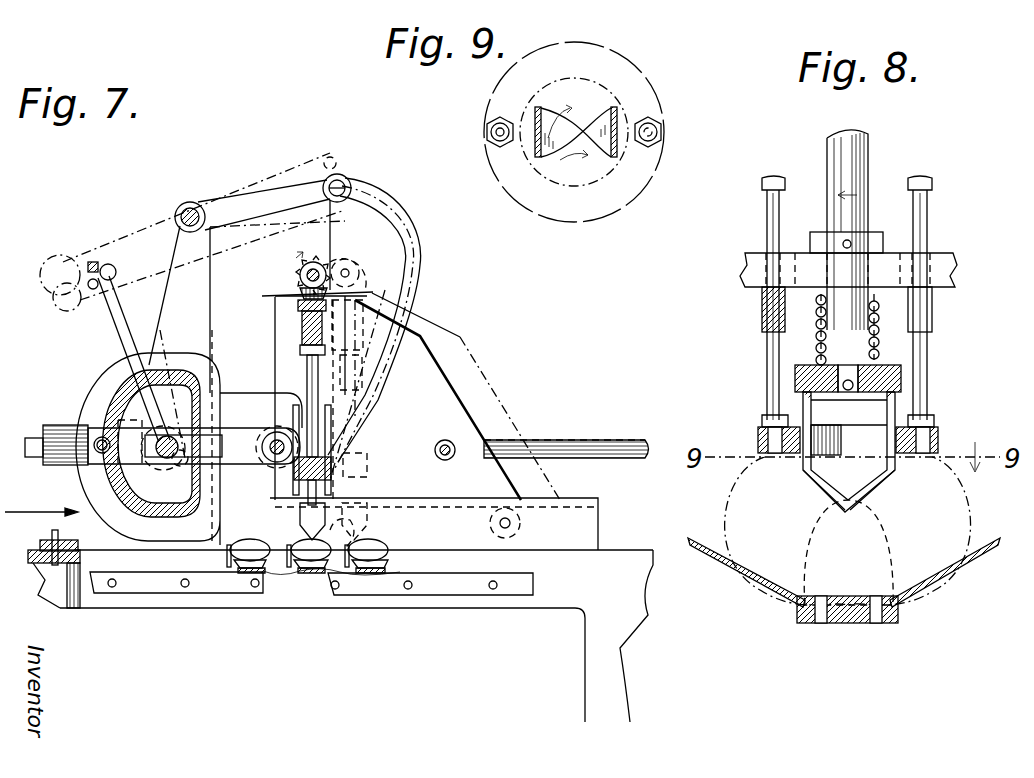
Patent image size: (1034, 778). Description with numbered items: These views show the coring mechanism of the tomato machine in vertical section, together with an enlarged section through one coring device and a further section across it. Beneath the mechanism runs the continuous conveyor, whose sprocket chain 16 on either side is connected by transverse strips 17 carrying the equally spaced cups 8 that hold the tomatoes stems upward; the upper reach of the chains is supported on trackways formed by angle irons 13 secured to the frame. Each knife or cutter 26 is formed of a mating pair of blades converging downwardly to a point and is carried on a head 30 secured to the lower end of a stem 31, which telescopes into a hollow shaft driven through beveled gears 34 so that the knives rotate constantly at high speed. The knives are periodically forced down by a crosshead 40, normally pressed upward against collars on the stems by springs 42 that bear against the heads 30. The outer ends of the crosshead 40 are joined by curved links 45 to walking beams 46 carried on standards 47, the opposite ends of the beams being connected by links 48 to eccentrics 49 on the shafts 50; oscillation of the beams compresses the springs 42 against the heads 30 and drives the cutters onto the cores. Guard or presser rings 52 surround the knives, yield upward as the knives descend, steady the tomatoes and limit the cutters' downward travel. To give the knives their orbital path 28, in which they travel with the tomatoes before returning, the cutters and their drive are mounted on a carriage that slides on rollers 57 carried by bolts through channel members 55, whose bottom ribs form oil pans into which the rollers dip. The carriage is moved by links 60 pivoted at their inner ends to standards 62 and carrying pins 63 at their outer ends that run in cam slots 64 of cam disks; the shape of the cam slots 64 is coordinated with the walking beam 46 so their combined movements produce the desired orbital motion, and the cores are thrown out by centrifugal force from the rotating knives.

In FIG. 7, the cups 8 is at (395, 565).
In FIG. 8, the cups 8 is at (945, 577).
In FIG. 7, the angle irons 13 is at (165, 594).
In FIG. 7, the sprocket chain 16 is at (332, 578).
In FIG. 7, the transverse strips 17 is at (243, 594).
In FIG. 7, the knives or cutters 26 is at (300, 529).
In FIG. 9, the knives or cutters 26 is at (605, 165).
In FIG. 8, the knives or cutters 26 is at (840, 500).
In FIG. 7, the orbital path 28 is at (370, 507).
In FIG. 8, the head 30 is at (900, 370).
In FIG. 7, the stem 31 is at (304, 404).
In FIG. 8, the stem 31 is at (869, 156).
In FIG. 7, the beveled gears 34 is at (298, 282).
In FIG. 8, the crosshead 40 is at (945, 262).
In FIG. 8, the springs 42 is at (880, 310).
In FIG. 7, the curved links 45 is at (412, 260).
In FIG. 7, the walking beams 46 is at (234, 200).
In FIG. 7, the standards 47 is at (198, 274).
In FIG. 7, the links 48 is at (125, 356).
In FIG. 7, the eccentrics 49 is at (174, 462).
In FIG. 7, the shafts 50 is at (160, 454).
In FIG. 9, the guard or presser rings 52 is at (655, 102).
In FIG. 8, the guard or presser rings 52 is at (760, 433).
In FIG. 7, the channel members 55 is at (598, 534).
In FIG. 7, the rollers 57 is at (522, 530).
In FIG. 7, the links 60 is at (236, 430).
In FIG. 7, the standards 62 is at (445, 400).
In FIG. 7, the pins or studs 63 is at (96, 444).
In FIG. 7, the cam slots 64 is at (150, 507).